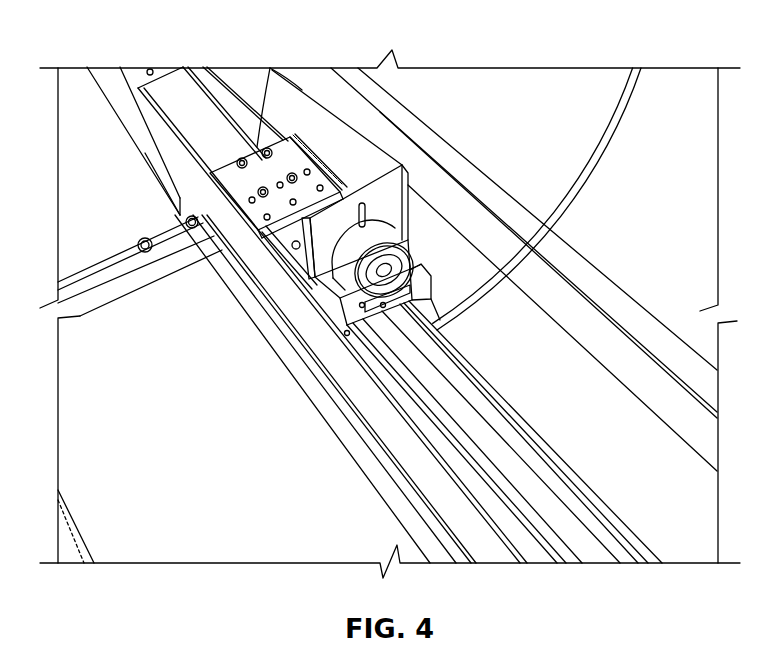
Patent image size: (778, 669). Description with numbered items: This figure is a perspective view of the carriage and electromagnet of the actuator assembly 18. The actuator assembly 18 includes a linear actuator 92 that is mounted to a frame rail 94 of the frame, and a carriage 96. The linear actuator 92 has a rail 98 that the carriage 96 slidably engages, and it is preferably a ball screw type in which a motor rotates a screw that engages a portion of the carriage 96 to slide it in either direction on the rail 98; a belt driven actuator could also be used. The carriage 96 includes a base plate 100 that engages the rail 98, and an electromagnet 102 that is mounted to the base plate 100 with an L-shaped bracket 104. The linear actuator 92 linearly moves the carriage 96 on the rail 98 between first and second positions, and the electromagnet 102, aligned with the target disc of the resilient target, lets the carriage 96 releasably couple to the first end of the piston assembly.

The actuator assembly 18 is at (210, 330).
The linear actuator 92 is at (366, 376).
The frame rail 94 is at (273, 348).
The carriage 96 is at (302, 135).
The rail 98 is at (513, 437).
The base plate 100 is at (279, 140).
The electromagnet 102 is at (440, 321).
The L-shaped bracket 104 is at (278, 235).